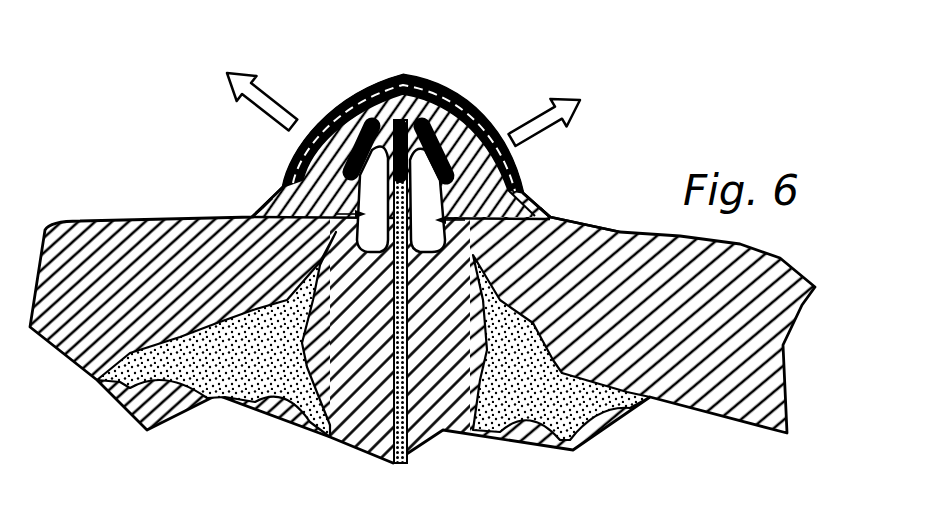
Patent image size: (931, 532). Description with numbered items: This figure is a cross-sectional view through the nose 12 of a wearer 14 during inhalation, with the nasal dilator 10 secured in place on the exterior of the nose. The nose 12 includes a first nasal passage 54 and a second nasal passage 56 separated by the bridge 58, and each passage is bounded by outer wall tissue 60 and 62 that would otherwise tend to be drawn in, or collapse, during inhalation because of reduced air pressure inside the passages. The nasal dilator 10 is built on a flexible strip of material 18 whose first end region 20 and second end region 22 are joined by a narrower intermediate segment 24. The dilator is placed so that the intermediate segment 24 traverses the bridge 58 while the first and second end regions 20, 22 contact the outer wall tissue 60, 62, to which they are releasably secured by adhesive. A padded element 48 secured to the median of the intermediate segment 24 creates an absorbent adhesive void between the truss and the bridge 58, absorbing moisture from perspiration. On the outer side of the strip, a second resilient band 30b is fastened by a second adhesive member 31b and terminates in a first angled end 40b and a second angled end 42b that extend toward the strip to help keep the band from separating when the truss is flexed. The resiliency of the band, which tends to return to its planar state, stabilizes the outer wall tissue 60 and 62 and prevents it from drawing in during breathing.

The nasal dilator 10 is at (393, 90).
The nose 12 is at (545, 105).
The wearer 14 is at (465, 266).
The flexible strip of material 18 is at (468, 122).
The first end region 20 is at (275, 195).
The second end region 22 is at (537, 204).
The intermediate segment 24 is at (443, 84).
The second resilient band 30b is at (337, 98).
The second adhesive member 31b is at (361, 84).
The first angled end 40b is at (281, 183).
The second angled end 42b is at (523, 183).
The padded element 48 is at (387, 75).
The first nasal passage 54 is at (263, 208).
The second nasal passage 56 is at (562, 225).
The bridge 58 is at (415, 77).
The outer wall tissue 60 is at (338, 160).
The outer wall tissue 62 is at (522, 170).